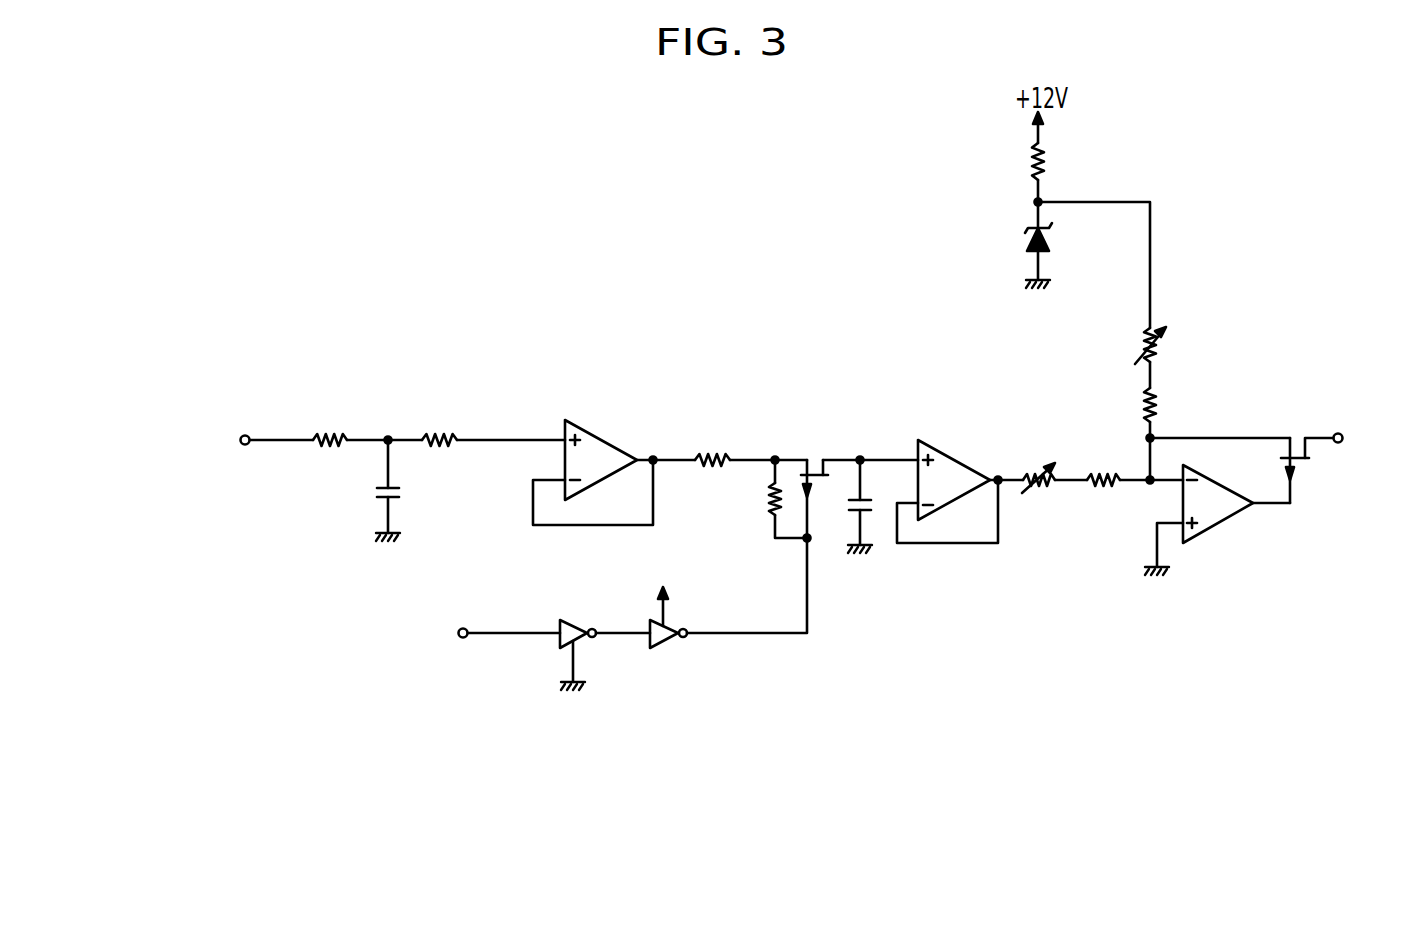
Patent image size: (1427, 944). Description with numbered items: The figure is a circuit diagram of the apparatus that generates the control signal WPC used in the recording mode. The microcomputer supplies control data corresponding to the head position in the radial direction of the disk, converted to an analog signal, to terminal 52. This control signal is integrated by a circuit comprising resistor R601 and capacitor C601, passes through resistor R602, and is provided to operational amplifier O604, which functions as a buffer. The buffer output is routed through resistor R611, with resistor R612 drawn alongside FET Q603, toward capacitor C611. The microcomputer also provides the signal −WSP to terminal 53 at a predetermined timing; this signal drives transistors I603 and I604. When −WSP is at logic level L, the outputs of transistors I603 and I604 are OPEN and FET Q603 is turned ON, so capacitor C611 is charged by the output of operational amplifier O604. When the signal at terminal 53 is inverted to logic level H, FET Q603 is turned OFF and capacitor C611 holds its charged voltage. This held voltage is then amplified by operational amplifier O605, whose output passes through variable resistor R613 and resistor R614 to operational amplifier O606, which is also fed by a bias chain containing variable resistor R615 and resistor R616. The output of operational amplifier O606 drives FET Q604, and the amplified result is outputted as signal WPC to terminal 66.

The terminal 52 is at (246, 445).
The terminal 53 is at (465, 638).
The terminal 66 is at (1338, 443).
The resistor R601 is at (335, 425).
The resistor R602 is at (436, 425).
The capacitor C601 is at (420, 490).
The operational amplifier O604 is at (593, 465).
The resistor R611 is at (710, 442).
The resistor R612 is at (758, 499).
The FET Q603 is at (813, 478).
The capacitor C611 is at (842, 506).
The operational amplifier O605 is at (950, 481).
The variable resistor R613 is at (1037, 497).
The resistor R614 is at (1108, 503).
The variable resistor R615 is at (1182, 346).
The resistor R616 is at (1189, 407).
The operational amplifier O606 is at (1200, 507).
The FET Q604 is at (1301, 448).
The transistor I603 is at (565, 637).
The transistor I604 is at (675, 625).